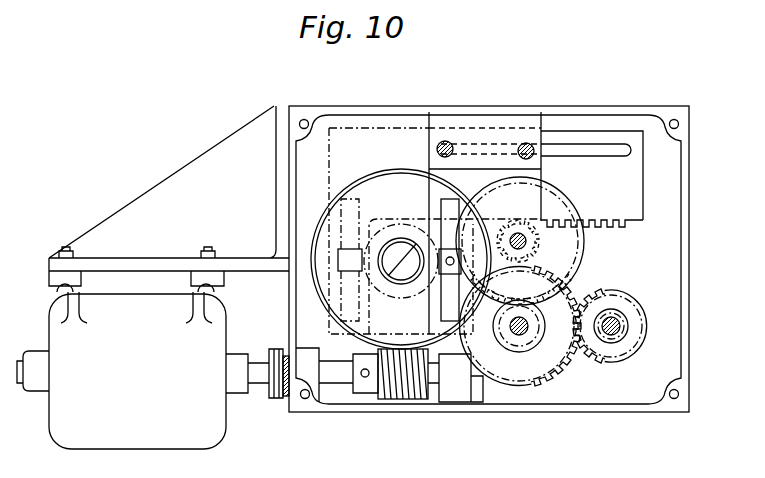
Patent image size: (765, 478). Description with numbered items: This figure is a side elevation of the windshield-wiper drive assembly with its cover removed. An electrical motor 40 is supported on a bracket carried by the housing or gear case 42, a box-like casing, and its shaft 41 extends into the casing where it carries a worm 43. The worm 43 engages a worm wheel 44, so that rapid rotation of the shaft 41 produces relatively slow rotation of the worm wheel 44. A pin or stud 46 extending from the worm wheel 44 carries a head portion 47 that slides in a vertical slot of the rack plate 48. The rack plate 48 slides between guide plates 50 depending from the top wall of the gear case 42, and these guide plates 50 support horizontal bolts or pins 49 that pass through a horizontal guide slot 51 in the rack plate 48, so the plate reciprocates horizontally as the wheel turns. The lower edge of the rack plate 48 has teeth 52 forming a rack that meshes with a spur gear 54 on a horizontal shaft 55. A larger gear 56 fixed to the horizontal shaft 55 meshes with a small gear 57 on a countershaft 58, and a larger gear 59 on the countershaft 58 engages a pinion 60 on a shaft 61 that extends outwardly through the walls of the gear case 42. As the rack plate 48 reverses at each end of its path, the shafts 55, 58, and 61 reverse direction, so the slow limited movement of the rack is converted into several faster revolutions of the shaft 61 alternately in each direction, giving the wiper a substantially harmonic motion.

The electrical motor 40 is at (153, 371).
The shaft 41 is at (337, 374).
The housing or gear case 42 is at (558, 107).
The worm 43 is at (403, 398).
The worm wheel 44 is at (381, 180).
The pin or stud 46 is at (454, 259).
The head portion 47 is at (458, 224).
The rack plate 48 is at (460, 178).
The horizontal bolts or pins 49 is at (445, 140).
The guide plates 50 is at (497, 122).
The horizontal guide slot 51 is at (599, 150).
The teeth 52 is at (592, 222).
The spur gear 54 is at (535, 233).
The horizontal shaft 55 is at (523, 243).
The larger gear 56 is at (563, 284).
The small gear 57 is at (536, 327).
The countershaft 58 is at (518, 335).
The larger gear 59 is at (543, 369).
The pinion 60 is at (612, 300).
The shaft 61 is at (619, 325).